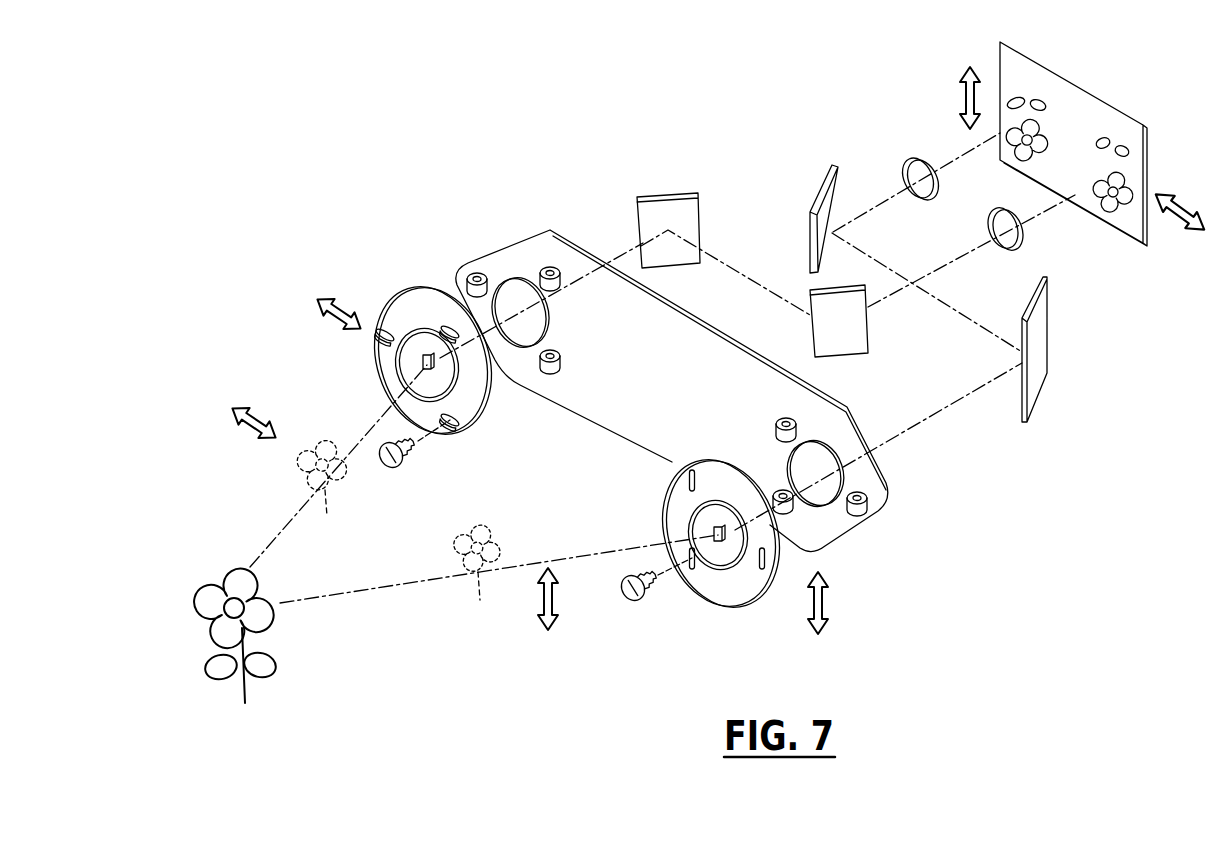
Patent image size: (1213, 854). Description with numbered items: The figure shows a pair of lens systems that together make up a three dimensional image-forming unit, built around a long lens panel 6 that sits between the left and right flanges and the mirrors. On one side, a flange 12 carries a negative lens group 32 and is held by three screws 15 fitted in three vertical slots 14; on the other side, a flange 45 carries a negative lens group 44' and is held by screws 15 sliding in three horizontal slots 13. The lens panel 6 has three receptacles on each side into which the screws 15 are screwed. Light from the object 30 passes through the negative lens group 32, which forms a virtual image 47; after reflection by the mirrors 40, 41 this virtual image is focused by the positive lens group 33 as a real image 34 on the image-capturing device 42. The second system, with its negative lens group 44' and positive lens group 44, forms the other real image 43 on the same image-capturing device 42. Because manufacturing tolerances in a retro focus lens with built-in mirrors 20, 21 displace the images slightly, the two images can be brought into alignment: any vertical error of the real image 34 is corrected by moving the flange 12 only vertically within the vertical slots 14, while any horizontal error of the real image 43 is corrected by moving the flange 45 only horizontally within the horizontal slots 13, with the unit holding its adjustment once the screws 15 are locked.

The lens panel 6 is at (897, 502).
The flange 12 is at (742, 580).
The horizontal slots 13 is at (453, 323).
The vertical slots 14 is at (687, 480).
The screws 15 is at (388, 468).
The built-in mirror 20 is at (628, 206).
The built-in mirror 21 is at (803, 290).
The object 30 is at (234, 623).
The negative lens group 32 is at (723, 557).
The positive lens group 33 is at (906, 152).
The real image 34 is at (1028, 128).
The mirror 40 is at (1020, 392).
The mirror 41 is at (830, 200).
The image-capturing device 42 is at (1080, 108).
The real image 43 is at (1113, 178).
The positive lens group 44 is at (1058, 262).
The negative lens group 44' is at (386, 365).
The flange 45 is at (403, 303).
The virtual image 47 is at (495, 580).